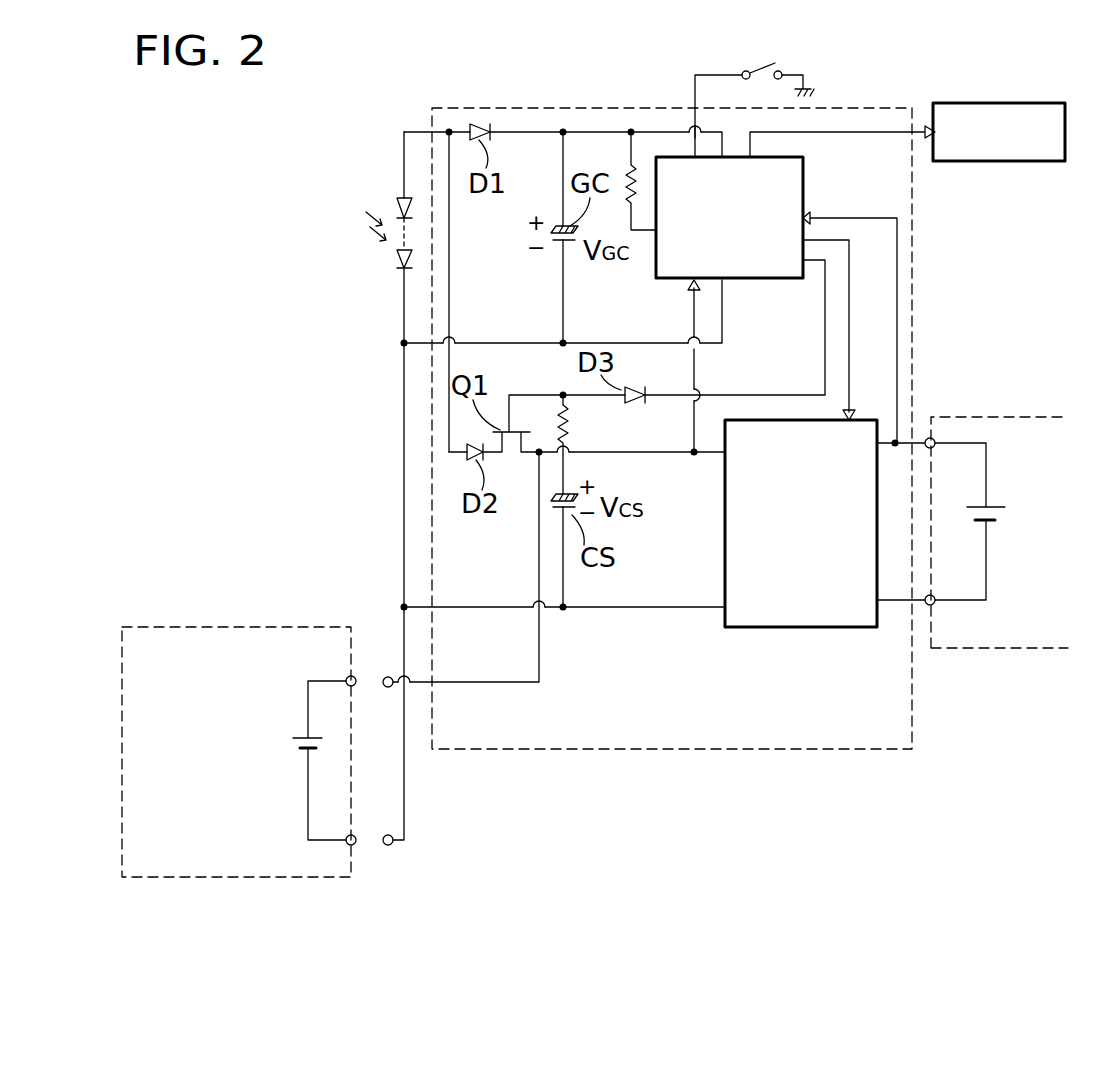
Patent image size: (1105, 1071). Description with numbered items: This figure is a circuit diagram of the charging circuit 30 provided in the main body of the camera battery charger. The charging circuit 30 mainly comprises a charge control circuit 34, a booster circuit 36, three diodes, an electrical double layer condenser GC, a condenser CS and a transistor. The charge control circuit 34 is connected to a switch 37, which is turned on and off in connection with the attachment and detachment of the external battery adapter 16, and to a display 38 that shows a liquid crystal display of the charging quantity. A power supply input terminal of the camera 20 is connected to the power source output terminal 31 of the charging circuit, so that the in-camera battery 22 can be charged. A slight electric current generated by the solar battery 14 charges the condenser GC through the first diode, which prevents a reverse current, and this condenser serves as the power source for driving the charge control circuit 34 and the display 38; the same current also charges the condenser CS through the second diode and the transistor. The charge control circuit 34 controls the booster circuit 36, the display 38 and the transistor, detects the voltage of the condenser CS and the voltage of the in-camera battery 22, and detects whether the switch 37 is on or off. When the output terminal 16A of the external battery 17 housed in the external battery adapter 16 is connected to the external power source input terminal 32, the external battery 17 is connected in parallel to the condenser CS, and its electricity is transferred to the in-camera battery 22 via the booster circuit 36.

The solar battery 14 is at (400, 198).
The external battery adapter 16 is at (311, 625).
The terminal of the external battery adapter 16A is at (354, 676).
The external battery 17 is at (314, 737).
The camera 20 is at (968, 415).
The in-camera battery 22 is at (1000, 505).
The charging circuit 30 is at (555, 107).
The power source output terminal 31 is at (935, 448).
The external power source input terminal 32 is at (388, 688).
The charge control circuit 34 is at (805, 183).
The booster circuit 36 is at (725, 553).
The switch 37 is at (742, 72).
The display 38 is at (965, 102).